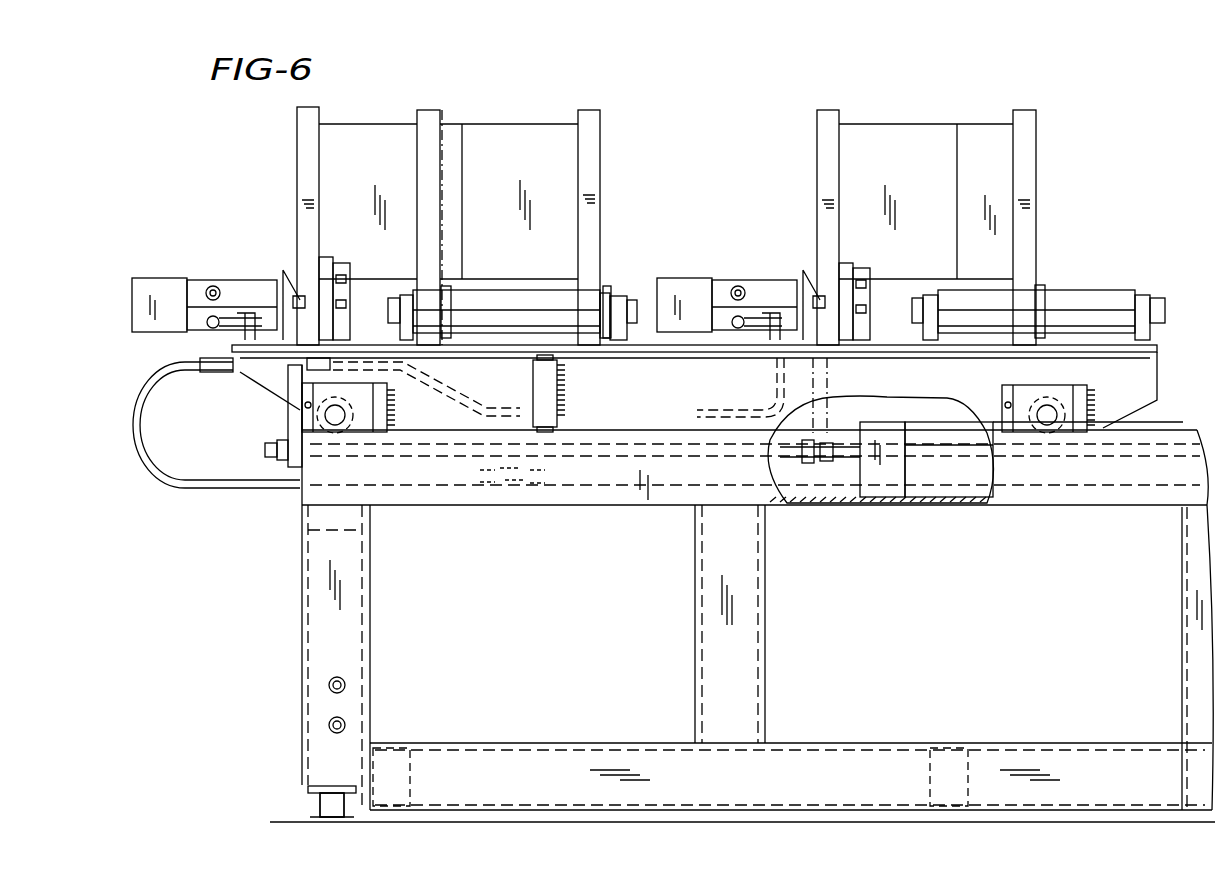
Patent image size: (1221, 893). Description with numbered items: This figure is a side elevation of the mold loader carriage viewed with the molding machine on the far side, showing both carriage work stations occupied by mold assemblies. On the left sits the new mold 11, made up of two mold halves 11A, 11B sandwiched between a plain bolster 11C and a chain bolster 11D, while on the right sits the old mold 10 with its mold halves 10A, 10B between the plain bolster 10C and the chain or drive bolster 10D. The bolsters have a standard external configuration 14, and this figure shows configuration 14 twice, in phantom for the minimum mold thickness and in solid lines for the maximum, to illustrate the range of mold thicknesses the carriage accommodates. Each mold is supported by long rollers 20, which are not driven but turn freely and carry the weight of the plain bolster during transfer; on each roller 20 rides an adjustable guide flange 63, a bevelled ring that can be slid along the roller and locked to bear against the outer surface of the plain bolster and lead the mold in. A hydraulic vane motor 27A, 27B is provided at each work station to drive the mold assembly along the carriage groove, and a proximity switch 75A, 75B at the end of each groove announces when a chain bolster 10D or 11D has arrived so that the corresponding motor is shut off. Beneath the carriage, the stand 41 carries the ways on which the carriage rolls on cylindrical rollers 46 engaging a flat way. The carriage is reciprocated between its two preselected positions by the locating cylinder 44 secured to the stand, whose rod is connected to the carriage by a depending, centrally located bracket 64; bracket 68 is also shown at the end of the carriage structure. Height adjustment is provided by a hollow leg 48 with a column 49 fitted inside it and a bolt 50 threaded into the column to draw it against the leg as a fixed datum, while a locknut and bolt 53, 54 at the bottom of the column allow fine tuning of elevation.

The mold 10 is at (936, 193).
The mold half 10A is at (900, 173).
The mold half 10B is at (1000, 173).
The plain bolster 10C is at (1040, 157).
The chain bolster 10D is at (820, 155).
The mold 11 is at (444, 188).
The mold half 11A is at (387, 173).
The mold half 11B is at (523, 173).
The plain bolster 11C is at (425, 108).
The chain bolster 11D is at (305, 152).
The external configuration 14 is at (492, 98).
The long roller 20 is at (545, 300).
The hydraulic vane motor 27A is at (720, 283).
The hydraulic vane motor 27B is at (205, 283).
The proximity switch 75A is at (828, 292).
The proximity switch 75B is at (300, 292).
The adjustable guide flange 63 is at (453, 292).
The bracket 64 is at (290, 427).
The mounting bracket 68 is at (1158, 347).
The cylindrical roller 46 is at (372, 412).
The locating cylinder 44 is at (950, 470).
The hollow leg 48 is at (320, 552).
The column 49 is at (368, 596).
The stand 41 is at (707, 663).
The bolt 50 is at (330, 722).
The locknut 53 is at (320, 805).
The bolt 54 is at (332, 805).